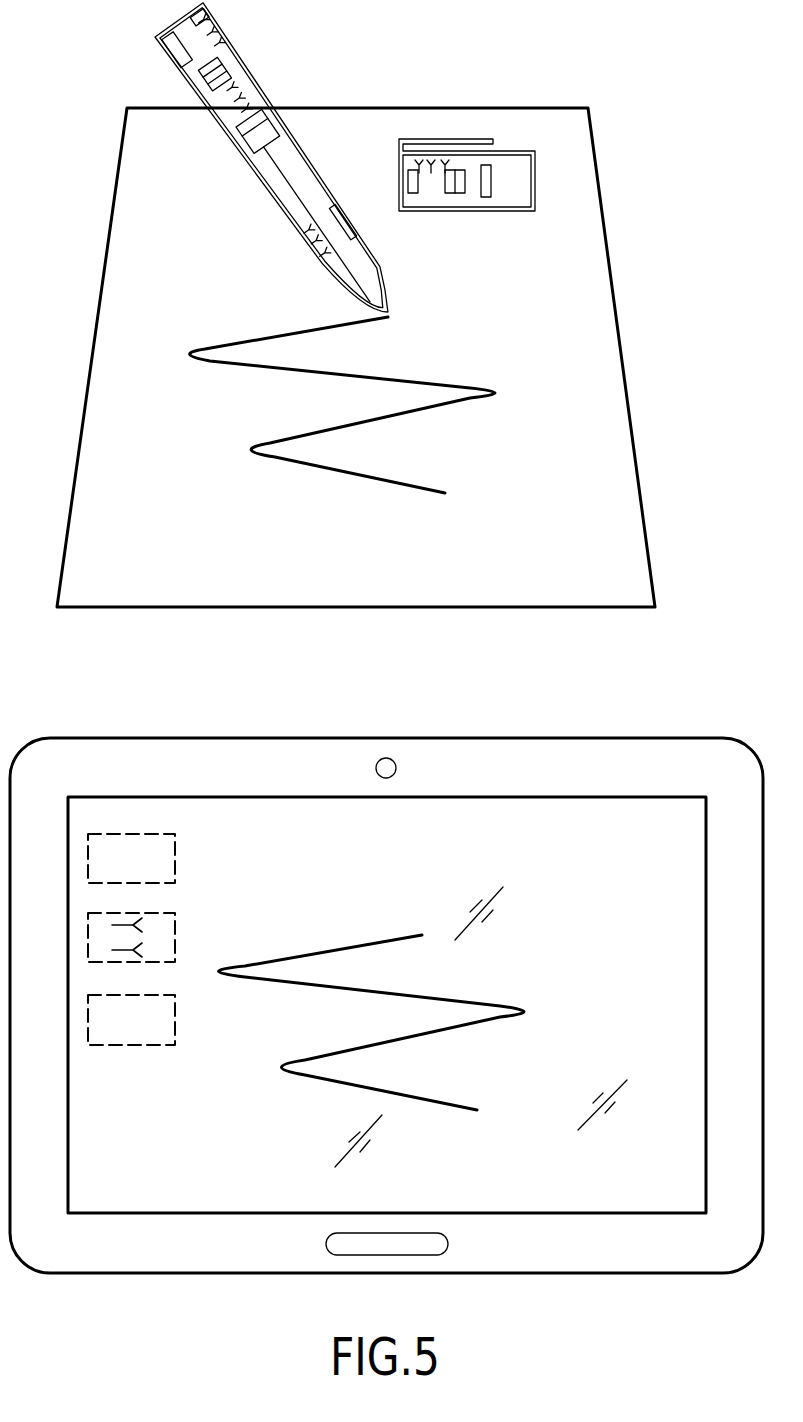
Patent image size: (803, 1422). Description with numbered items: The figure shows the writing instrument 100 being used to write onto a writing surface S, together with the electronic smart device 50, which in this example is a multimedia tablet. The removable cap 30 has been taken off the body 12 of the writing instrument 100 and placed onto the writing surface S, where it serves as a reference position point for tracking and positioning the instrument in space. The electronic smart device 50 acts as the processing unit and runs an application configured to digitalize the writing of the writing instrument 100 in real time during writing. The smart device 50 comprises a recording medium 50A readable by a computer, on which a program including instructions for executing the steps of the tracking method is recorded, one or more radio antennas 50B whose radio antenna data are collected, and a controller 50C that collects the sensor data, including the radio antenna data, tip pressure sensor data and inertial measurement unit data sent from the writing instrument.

The writing instrument 100 is at (569, 73).
The writing surface S is at (133, 217).
The body 12 is at (250, 72).
The cap 30 is at (508, 150).
The electronic smart device 50 is at (590, 738).
The recording medium 50A is at (176, 859).
The radio antennas 50B is at (176, 939).
The controller 50C is at (176, 1020).